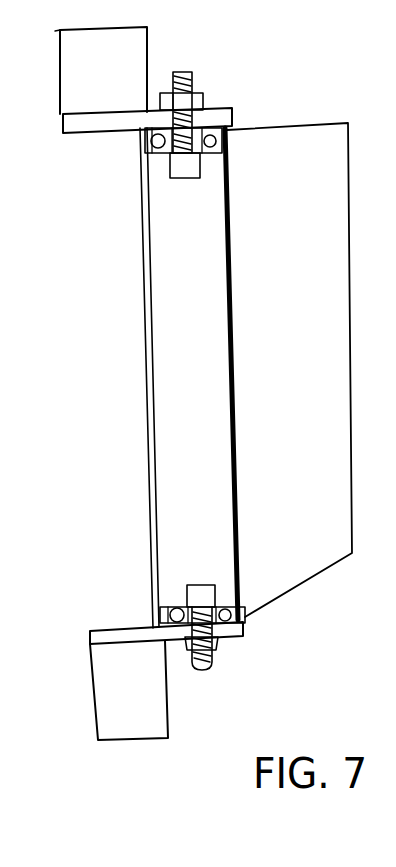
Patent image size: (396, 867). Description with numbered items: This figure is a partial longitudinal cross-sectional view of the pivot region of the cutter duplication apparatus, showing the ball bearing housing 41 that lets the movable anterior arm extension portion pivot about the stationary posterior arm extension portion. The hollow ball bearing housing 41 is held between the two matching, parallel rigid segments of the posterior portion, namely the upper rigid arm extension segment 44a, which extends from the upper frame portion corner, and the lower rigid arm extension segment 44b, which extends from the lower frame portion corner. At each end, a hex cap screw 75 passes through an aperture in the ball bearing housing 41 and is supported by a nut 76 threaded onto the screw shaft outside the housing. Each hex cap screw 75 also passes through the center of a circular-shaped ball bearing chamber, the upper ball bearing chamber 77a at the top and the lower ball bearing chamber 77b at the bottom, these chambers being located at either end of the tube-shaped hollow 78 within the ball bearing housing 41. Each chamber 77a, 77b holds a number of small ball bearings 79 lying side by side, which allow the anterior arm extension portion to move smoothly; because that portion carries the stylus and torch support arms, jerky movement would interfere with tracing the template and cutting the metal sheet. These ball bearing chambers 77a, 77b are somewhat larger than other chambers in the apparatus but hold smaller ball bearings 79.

The ball bearing housing 41 is at (160, 408).
The upper rigid arm extension segment 44a is at (120, 83).
The lower rigid arm extension segment 44b is at (147, 720).
The hex cap screw 75 is at (183, 72).
The nut 76 is at (193, 100).
The upper ball bearing chamber 77a is at (147, 153).
The lower ball bearing chamber 77b is at (133, 607).
The tube-shaped hollow 78 is at (205, 424).
The ball bearing 79 is at (227, 150).